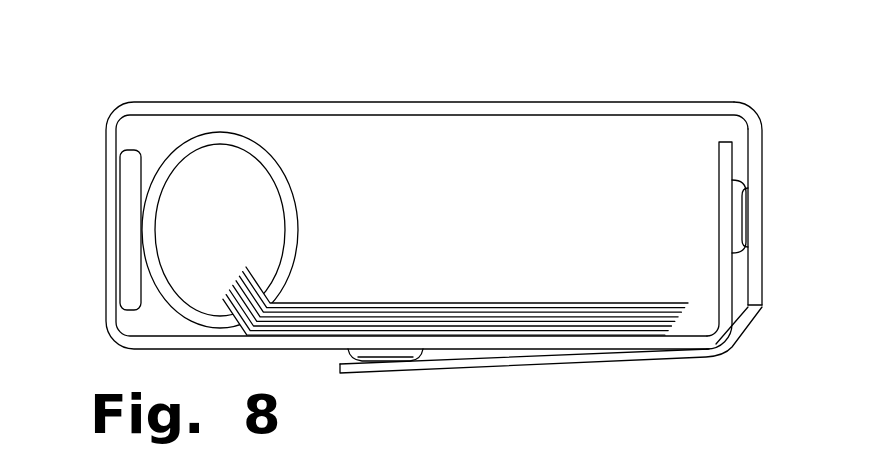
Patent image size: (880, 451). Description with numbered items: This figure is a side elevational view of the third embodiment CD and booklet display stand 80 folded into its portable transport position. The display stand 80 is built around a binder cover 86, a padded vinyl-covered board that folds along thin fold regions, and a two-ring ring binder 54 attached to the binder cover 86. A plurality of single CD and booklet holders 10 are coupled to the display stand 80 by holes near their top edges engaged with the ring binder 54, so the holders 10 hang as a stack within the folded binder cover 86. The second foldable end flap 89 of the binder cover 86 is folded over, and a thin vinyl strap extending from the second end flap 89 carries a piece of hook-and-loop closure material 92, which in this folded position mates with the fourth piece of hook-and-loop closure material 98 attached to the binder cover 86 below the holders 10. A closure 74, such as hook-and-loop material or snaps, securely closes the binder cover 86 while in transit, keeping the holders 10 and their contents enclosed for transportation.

The CD and booklet display stand 80 is at (126, 78).
The binder cover 86 is at (632, 101).
The second foldable end flap 89 is at (722, 157).
The closure 74 is at (725, 222).
The ring binder 54 is at (298, 212).
The single CD and booklet holder 10 is at (540, 302).
The fourth piece of hook-and-loop closure material 98 is at (403, 357).
The hook-and-loop closure material piece 92 is at (370, 363).